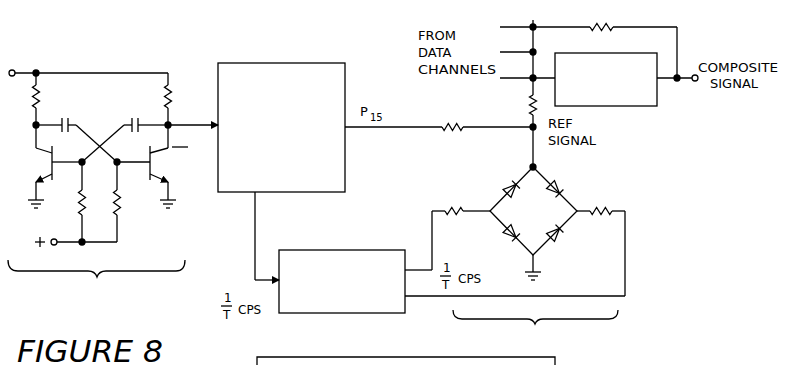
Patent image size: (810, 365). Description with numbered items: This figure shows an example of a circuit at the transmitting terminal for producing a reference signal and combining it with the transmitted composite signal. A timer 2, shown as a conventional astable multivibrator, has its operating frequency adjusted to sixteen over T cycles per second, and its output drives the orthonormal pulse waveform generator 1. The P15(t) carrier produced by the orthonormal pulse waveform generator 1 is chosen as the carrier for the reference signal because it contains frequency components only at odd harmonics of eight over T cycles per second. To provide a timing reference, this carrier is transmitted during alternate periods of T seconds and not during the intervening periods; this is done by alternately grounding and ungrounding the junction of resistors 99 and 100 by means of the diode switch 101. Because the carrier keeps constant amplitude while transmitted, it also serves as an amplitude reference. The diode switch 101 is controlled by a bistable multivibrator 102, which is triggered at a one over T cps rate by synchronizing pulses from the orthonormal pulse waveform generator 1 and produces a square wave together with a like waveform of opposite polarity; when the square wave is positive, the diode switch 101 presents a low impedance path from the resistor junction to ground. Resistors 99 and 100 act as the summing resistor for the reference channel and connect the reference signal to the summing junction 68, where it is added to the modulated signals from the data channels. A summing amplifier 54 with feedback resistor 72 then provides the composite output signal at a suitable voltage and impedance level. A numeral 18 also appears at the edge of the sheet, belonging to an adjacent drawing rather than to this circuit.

The orthonormal pulse waveform generator 1 is at (252, 70).
The timer 2 is at (98, 278).
The summing amplifier 54 is at (642, 99).
The summing junction 68 is at (530, 20).
The feedback resistor 72 is at (617, 18).
The resistor 99 is at (461, 124).
The resistor 100 is at (526, 107).
The diode switch 101 is at (537, 325).
The bistable multivibrator 102 is at (298, 308).
The block of adjacent figure 18 is at (334, 362).